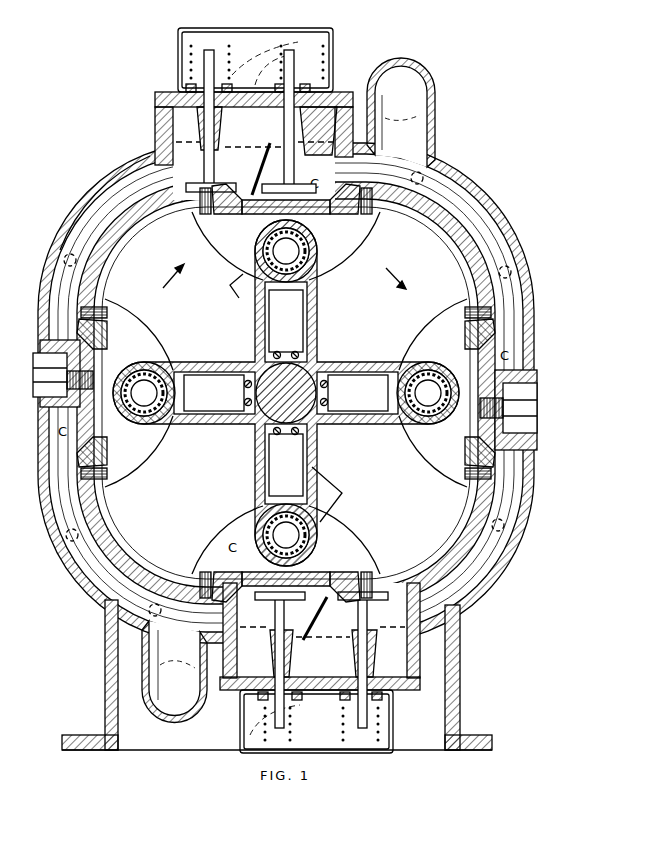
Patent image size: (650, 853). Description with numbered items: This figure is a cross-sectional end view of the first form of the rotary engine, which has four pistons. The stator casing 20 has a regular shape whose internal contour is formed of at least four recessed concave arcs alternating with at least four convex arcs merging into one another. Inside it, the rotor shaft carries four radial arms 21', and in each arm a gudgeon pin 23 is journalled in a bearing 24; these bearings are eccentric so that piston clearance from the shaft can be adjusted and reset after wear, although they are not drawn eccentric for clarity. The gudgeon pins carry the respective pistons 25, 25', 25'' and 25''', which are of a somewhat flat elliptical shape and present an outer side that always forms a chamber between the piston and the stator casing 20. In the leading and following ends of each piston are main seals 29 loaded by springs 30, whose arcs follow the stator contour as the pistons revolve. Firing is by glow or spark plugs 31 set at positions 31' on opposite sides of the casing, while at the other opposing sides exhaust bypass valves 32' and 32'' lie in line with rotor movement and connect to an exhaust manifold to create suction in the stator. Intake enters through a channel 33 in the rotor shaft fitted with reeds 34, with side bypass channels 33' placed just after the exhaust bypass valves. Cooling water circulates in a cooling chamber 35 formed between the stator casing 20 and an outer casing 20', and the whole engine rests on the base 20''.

The stator casing 20 is at (286, 393).
The outer casing 20' is at (104, 203).
The base of engine 20'' is at (282, 675).
The radial arms 21' is at (286, 393).
The gudgeon pin 23 is at (286, 393).
The bearing 24 is at (320, 237).
The piston 25 is at (286, 215).
The piston 25' is at (444, 390).
The piston 25'' is at (305, 564).
The piston 25''' is at (132, 396).
The main seals 29 is at (107, 308).
The springs 30 is at (453, 337).
The glow or spark plugs 31 is at (286, 385).
The plug positions 31' is at (285, 397).
The exhaust bypass valve 32' is at (288, 389).
The exhaust bypass valve 32'' is at (286, 389).
The intake channel 33 is at (223, 286).
The side bypass channels 33' is at (332, 491).
The reeds 34 is at (286, 393).
The cooling chamber 35 is at (477, 578).